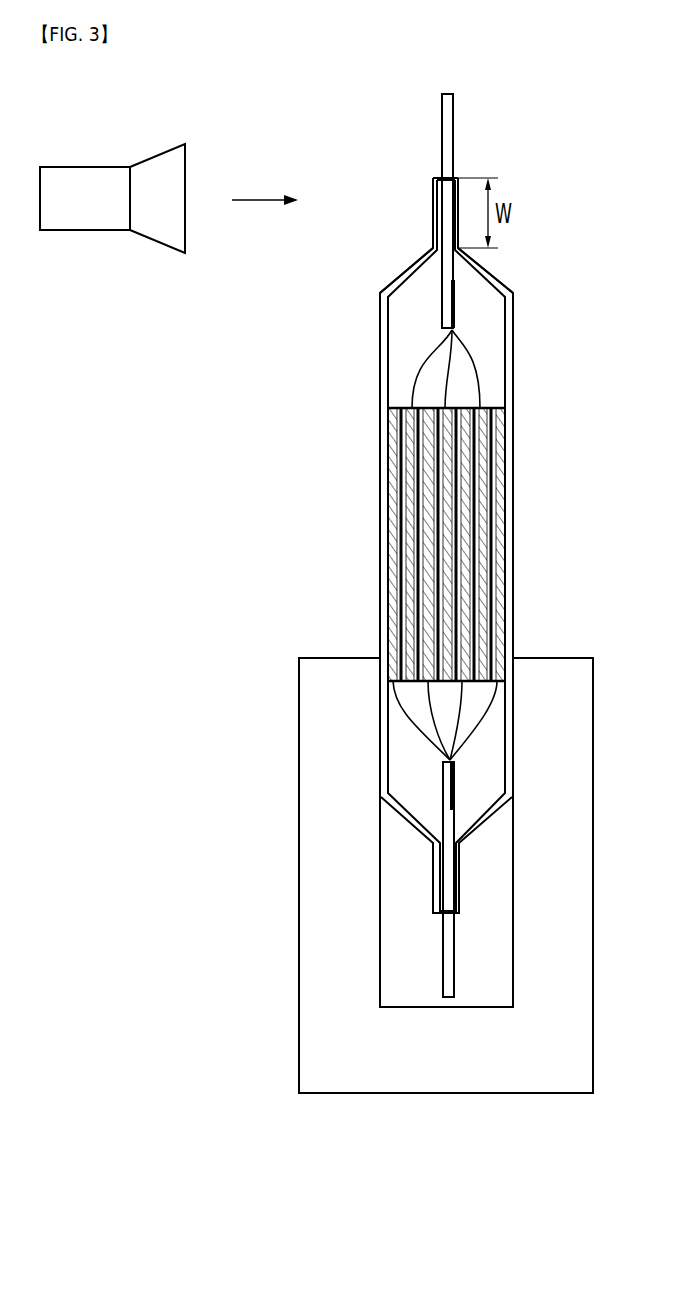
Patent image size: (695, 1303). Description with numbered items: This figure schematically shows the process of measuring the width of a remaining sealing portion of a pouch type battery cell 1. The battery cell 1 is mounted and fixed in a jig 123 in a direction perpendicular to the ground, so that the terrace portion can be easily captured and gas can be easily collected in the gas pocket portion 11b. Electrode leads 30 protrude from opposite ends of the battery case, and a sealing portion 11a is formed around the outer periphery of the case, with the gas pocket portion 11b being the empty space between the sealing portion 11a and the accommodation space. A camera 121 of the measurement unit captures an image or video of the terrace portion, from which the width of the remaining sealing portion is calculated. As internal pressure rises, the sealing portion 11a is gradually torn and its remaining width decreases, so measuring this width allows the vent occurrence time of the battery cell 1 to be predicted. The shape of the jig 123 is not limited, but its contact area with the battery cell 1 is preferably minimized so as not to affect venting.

The battery cell 1 is at (540, 528).
The sealing portion 11a is at (433, 197).
The gas pocket portion 11b is at (420, 280).
The electrode lead 30 is at (454, 130).
The camera 121 is at (108, 232).
The jig 123 is at (537, 1096).